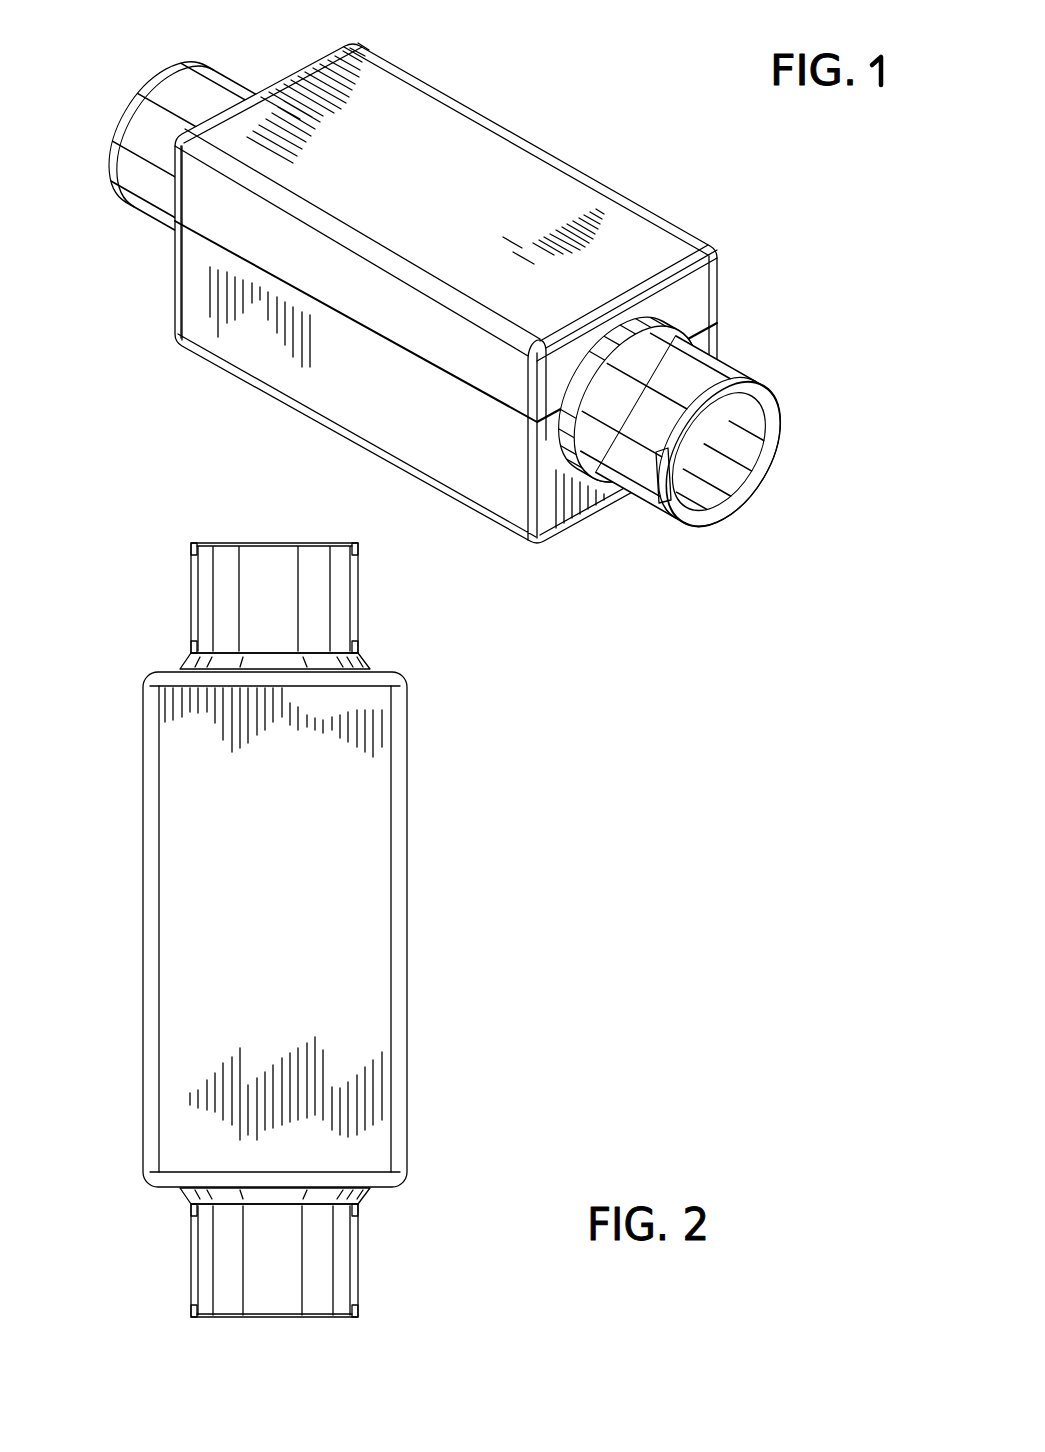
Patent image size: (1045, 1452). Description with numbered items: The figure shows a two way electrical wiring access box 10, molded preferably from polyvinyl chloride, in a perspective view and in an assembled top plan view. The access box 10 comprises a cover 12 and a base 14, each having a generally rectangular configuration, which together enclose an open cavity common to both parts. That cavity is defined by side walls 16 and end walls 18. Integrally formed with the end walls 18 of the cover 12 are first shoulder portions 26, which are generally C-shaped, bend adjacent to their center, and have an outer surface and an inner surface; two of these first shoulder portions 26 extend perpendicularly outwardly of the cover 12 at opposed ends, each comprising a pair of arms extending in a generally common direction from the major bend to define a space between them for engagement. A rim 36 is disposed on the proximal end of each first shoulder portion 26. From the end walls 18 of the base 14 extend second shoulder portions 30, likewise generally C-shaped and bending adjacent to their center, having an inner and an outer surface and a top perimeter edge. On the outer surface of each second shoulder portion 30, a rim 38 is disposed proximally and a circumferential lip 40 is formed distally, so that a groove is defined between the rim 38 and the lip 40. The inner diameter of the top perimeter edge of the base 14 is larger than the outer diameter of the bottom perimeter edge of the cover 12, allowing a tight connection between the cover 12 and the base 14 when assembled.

In FIG. 1, the electrical wiring access box 10 is at (113, 33).
In FIG. 2, the electrical wiring access box 10 is at (130, 537).
In FIG. 1, the cover 12 is at (498, 50).
In FIG. 2, the cover 12 is at (512, 906).
In FIG. 1, the base 14 is at (98, 325).
In FIG. 1, the side walls 16 is at (342, 378).
In FIG. 2, the side walls 16 is at (143, 878).
In FIG. 1, the end walls 18 is at (717, 250).
In FIG. 2, the end walls 18 is at (387, 667).
In FIG. 1, the first shoulder portions 26 is at (232, 80).
In FIG. 2, the first shoulder portions 26 is at (190, 588).
In FIG. 1, the second shoulder portions 30 is at (733, 447).
In FIG. 1, the rim 36 is at (690, 322).
In FIG. 2, the rim 36 is at (183, 663).
In FIG. 1, the rim 38 is at (613, 490).
In FIG. 1, the circumferential lip 40 is at (110, 177).
In FIG. 2, the circumferential lip 40 is at (358, 543).